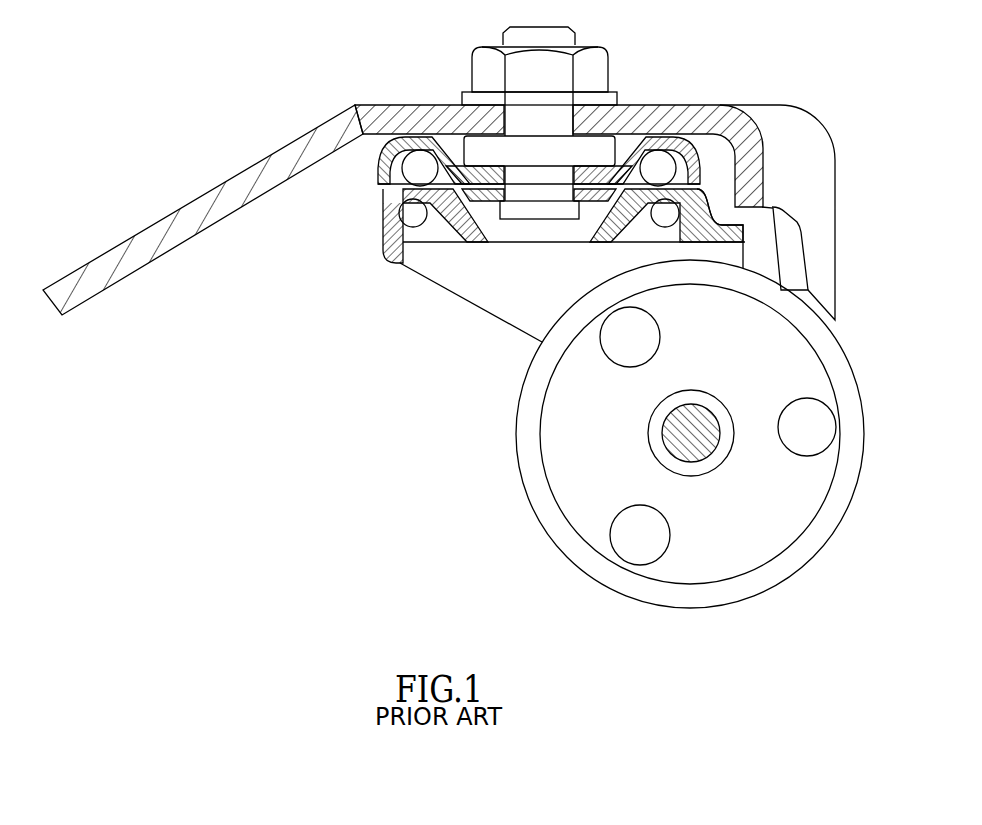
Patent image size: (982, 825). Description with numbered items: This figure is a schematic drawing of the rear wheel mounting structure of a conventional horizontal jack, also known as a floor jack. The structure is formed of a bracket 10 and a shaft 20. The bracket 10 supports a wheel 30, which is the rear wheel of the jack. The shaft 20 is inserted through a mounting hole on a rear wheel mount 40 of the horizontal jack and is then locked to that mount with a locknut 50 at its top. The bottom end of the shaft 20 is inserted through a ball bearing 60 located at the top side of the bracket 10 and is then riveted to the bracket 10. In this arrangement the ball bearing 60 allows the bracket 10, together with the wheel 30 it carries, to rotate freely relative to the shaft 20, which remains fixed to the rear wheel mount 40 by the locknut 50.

The bracket 10 is at (522, 303).
The shaft 20 is at (552, 118).
The wheel 30 is at (865, 407).
The rear wheel mount 40 is at (242, 190).
The locknut 50 is at (483, 75).
The ball bearing 60 is at (380, 178).